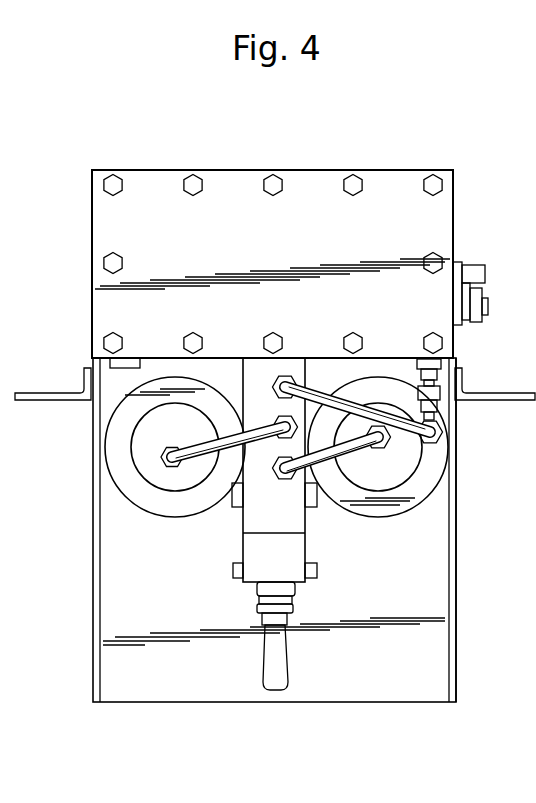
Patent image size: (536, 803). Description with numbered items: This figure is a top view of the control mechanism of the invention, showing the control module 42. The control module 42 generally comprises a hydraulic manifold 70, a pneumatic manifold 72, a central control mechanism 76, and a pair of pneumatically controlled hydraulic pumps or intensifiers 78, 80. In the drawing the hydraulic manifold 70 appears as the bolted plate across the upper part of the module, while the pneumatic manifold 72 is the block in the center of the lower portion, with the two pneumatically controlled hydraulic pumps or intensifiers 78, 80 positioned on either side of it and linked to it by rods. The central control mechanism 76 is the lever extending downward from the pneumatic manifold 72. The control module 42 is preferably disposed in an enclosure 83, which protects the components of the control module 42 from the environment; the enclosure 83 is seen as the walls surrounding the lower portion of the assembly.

The control module 42 is at (340, 137).
The hydraulic manifold 70 is at (163, 368).
The pneumatic manifold 72 is at (258, 523).
The central control mechanism 76 is at (280, 660).
The pneumatically controlled hydraulic pump or intensifier 78 is at (118, 445).
The pneumatically controlled hydraulic pump or intensifier 80 is at (437, 465).
The enclosure 83 is at (458, 620).